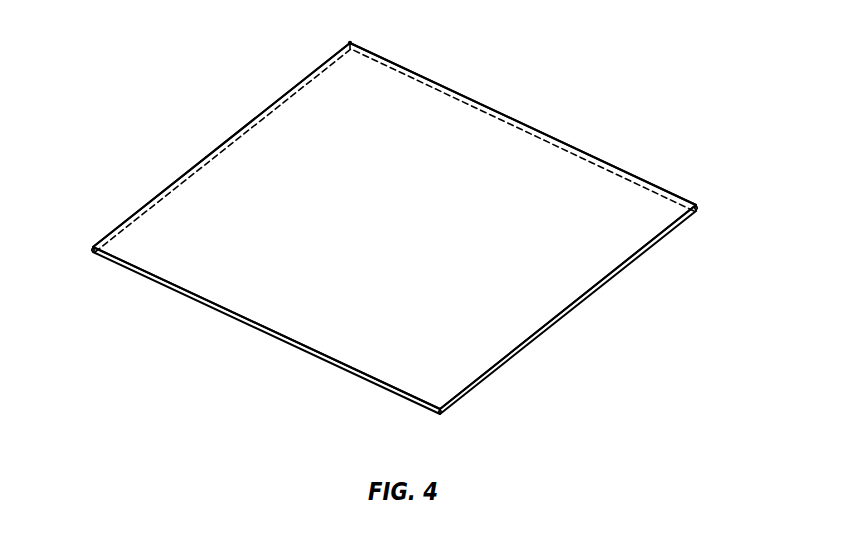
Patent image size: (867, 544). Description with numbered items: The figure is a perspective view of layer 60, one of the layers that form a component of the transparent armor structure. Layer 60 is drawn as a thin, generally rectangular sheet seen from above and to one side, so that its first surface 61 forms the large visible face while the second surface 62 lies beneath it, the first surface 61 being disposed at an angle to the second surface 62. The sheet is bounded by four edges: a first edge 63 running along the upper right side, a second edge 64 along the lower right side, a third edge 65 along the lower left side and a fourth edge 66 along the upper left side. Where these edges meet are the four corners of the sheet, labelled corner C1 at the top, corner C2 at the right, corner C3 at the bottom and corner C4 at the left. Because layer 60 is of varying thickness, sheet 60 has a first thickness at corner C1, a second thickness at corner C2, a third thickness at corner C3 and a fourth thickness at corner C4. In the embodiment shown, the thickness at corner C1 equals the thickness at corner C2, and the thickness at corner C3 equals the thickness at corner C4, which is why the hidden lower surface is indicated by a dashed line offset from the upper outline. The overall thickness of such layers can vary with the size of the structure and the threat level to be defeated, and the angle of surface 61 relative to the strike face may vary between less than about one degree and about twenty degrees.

The layer 60 is at (398, 234).
The first surface 61 is at (443, 123).
The second surface 62 is at (625, 273).
The first edge 63 is at (580, 150).
The second edge 64 is at (490, 382).
The third edge 65 is at (253, 327).
The fourth edge 66 is at (235, 133).
The corner C1 is at (352, 45).
The corner C2 is at (698, 212).
The corner C3 is at (440, 415).
The corner C4 is at (90, 250).